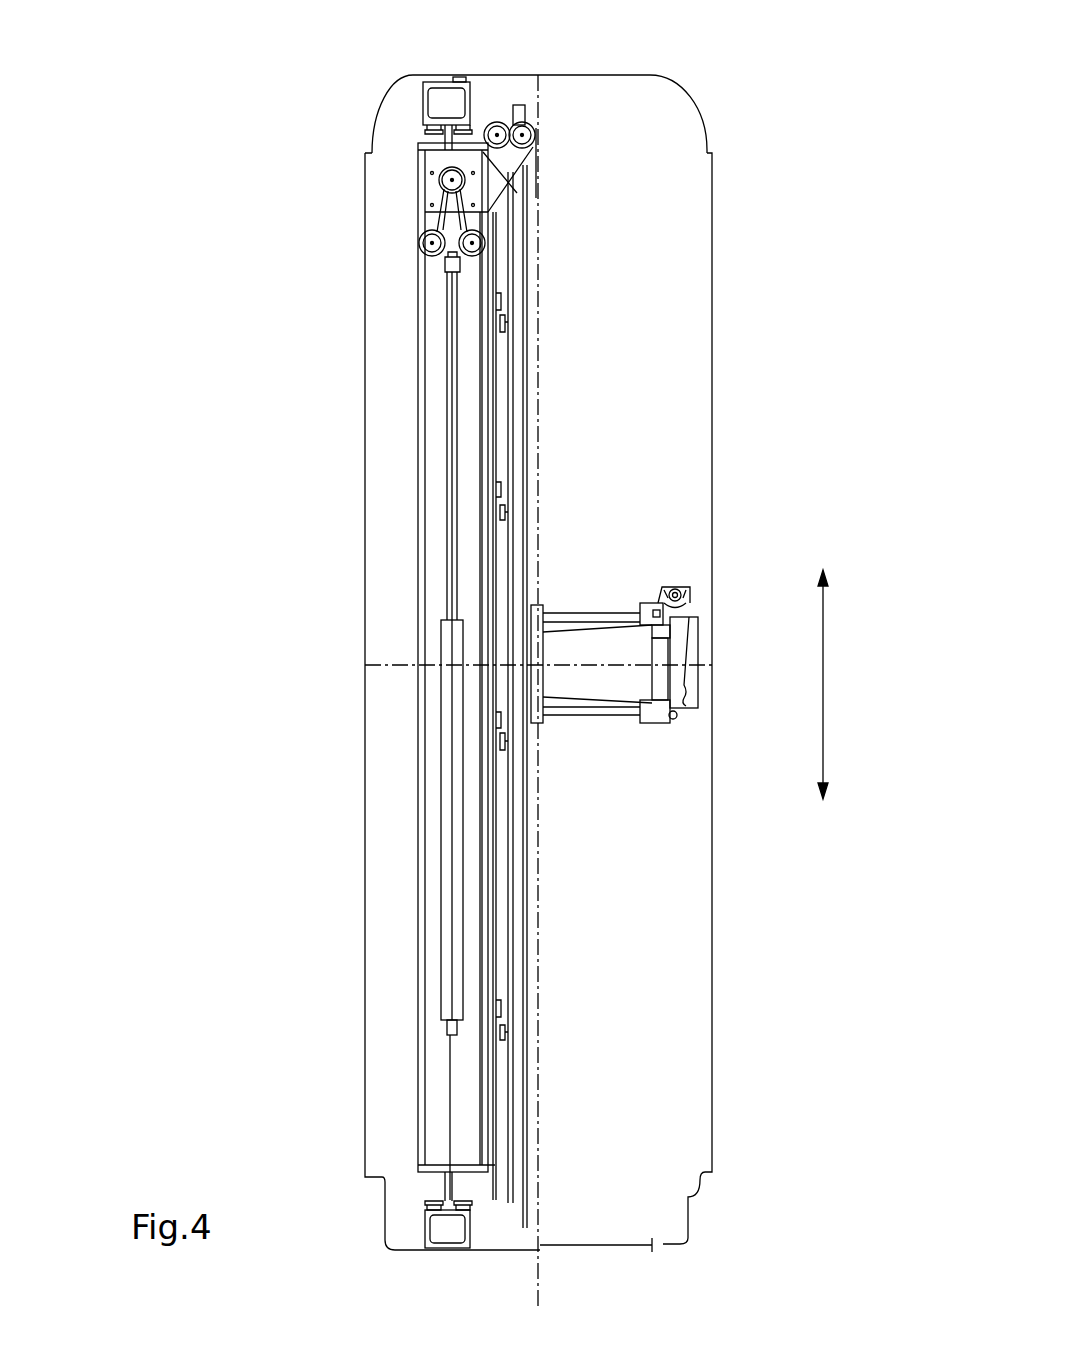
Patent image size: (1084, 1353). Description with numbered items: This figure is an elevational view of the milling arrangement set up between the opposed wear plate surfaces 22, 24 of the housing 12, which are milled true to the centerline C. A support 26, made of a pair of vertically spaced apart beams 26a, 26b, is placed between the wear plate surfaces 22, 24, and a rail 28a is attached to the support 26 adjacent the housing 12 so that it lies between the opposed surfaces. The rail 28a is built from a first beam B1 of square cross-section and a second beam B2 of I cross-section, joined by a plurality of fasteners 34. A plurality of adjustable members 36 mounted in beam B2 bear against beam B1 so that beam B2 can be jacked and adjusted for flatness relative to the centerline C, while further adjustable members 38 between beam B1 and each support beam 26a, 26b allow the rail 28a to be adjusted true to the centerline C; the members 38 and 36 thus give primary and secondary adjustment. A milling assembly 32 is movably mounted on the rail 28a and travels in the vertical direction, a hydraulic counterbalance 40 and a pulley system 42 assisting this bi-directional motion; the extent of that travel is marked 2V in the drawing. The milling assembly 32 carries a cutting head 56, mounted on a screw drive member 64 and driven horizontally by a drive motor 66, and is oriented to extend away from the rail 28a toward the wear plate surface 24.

The housing 12 is at (365, 540).
The wear plate surface 22 is at (366, 308).
The wear plate surface 24 is at (700, 352).
The support 26 is at (395, 661).
The beam 26a is at (470, 90).
The beam 26b is at (424, 1230).
The rail 28a is at (420, 442).
The milling assembly 32 is at (652, 695).
The fastener 34 is at (503, 300).
The adjustable member 36 is at (505, 322).
The adjustable member 38 is at (430, 132).
The hydraulic counterbalance 40 is at (434, 877).
The pulley system 42 is at (412, 237).
The cutting head 56 is at (697, 640).
The screw drive member 64 is at (688, 598).
The drive motor 66 is at (673, 720).
The centerline C is at (540, 96).
The first beam B1 is at (424, 1103).
The second beam B2 is at (501, 1280).
The stroke dimension 2V is at (841, 684).